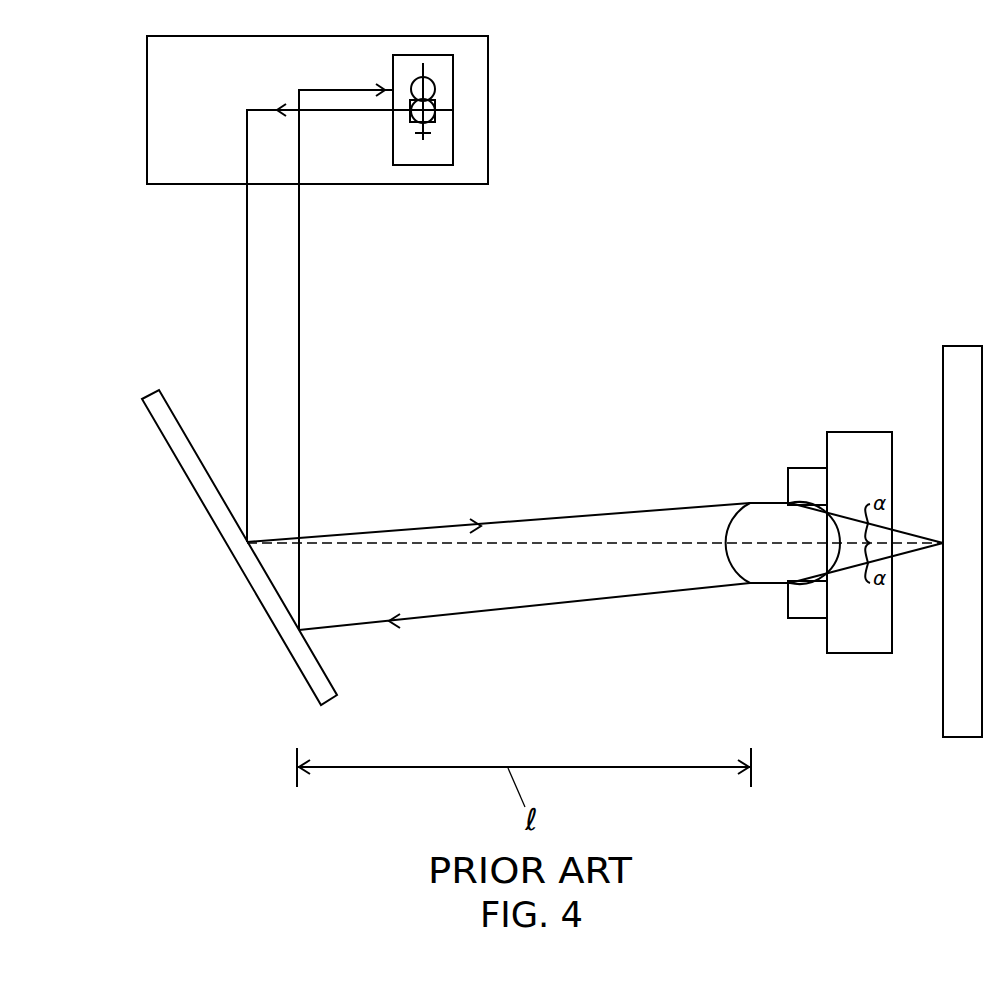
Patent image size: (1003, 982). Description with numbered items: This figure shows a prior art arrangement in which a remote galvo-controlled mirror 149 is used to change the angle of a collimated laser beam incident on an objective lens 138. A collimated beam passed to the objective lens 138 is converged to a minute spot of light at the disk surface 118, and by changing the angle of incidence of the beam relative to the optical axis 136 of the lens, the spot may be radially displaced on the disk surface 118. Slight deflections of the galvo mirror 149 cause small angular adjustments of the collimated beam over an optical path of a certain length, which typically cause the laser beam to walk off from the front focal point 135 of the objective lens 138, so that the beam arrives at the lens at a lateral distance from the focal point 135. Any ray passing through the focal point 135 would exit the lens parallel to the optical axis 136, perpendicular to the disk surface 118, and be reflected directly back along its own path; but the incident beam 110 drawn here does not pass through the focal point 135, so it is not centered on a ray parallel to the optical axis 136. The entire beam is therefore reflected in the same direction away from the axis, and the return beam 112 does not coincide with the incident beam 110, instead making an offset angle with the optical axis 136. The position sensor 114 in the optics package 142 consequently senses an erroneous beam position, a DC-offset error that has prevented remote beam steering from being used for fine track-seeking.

The position sensor 114 is at (453, 84).
The optics package 142 is at (488, 154).
The galvo-controlled mirror 149 is at (150, 389).
The incident beam 110 is at (543, 518).
The return beam 112 is at (508, 612).
The optical axis 136 is at (595, 543).
The front focal point 135 is at (704, 543).
The objective lens 138 is at (808, 468).
The disk surface 118 is at (943, 367).